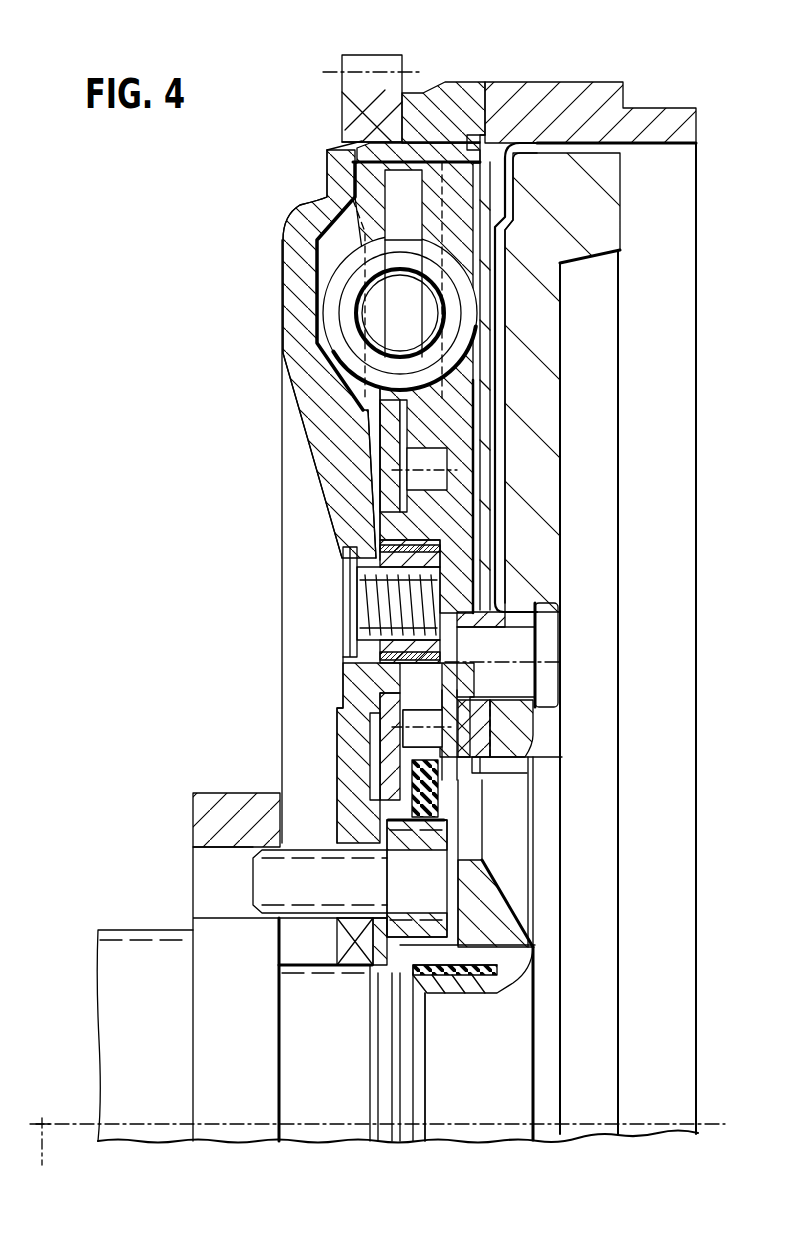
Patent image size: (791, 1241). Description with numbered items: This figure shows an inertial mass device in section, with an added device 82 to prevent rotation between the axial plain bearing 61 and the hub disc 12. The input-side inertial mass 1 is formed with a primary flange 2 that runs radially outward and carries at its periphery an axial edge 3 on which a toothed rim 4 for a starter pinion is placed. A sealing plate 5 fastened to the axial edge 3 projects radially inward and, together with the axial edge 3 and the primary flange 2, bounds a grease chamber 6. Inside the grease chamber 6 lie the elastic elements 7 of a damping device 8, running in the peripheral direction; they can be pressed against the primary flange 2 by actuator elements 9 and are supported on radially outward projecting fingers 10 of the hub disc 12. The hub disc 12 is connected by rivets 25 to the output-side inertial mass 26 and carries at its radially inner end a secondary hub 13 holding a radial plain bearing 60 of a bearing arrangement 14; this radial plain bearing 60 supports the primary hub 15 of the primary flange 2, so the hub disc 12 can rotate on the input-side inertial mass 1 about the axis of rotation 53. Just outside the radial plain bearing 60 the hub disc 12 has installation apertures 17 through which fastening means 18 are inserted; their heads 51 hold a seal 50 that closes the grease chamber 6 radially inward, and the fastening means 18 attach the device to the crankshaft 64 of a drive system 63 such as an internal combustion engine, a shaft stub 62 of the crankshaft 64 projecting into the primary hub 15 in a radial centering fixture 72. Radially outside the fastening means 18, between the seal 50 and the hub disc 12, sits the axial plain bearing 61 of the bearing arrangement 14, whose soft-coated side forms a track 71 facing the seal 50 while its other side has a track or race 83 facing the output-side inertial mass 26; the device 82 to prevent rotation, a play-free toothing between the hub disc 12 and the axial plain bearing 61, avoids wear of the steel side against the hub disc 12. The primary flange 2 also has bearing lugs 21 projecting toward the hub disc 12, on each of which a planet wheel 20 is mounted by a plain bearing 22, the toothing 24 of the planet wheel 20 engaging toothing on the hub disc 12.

The input-side inertial mass 1 is at (330, 457).
The primary flange 2 is at (328, 402).
The axial edge 3 is at (420, 122).
The toothed rim 4 is at (363, 112).
The sealing plate 5 is at (482, 253).
The grease chamber 6 is at (355, 393).
The elastic elements 7 is at (347, 308).
The damping device 8 is at (312, 327).
The actuator elements 9 is at (330, 245).
The fingers 10 is at (398, 197).
The hub disc 12 is at (470, 572).
The secondary hub 13 is at (478, 995).
The bearing arrangement 14 is at (466, 791).
The primary hub 15 is at (513, 983).
The installation apertures 17 is at (525, 945).
The fastening means 18 is at (300, 873).
The planet wheel 20 is at (343, 677).
The bearing lugs 21 is at (380, 553).
The plain bearing 22 is at (380, 663).
The toothing 24 is at (447, 460).
The rivets 25 is at (510, 653).
The output-side inertial mass 26 is at (545, 317).
The seal 50 is at (373, 925).
The heads 51 is at (372, 977).
The axis of rotation 53 is at (46, 1161).
The radial plain bearing 60 is at (457, 980).
The axial plain bearing 61 is at (472, 801).
The shaft stub 62 is at (345, 1103).
The drive system 63 is at (138, 990).
The crankshaft 64 is at (232, 1098).
The track 71 is at (340, 797).
The radial centering fixture 72 is at (408, 1148).
The device to prevent rotation 82 is at (475, 763).
The track or race 83 is at (500, 925).